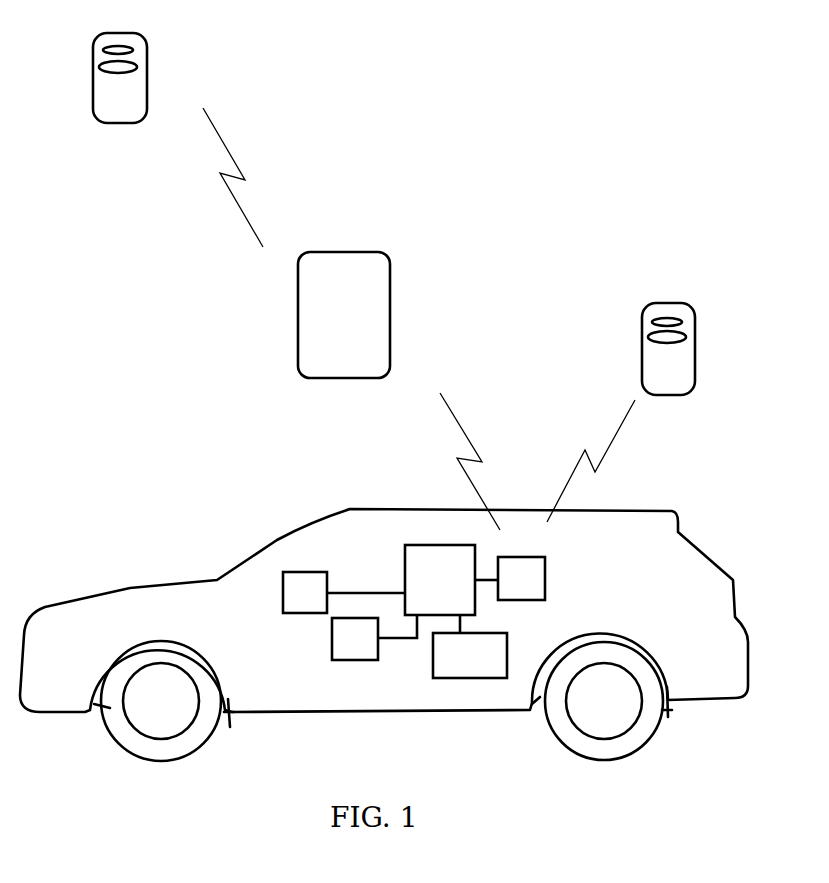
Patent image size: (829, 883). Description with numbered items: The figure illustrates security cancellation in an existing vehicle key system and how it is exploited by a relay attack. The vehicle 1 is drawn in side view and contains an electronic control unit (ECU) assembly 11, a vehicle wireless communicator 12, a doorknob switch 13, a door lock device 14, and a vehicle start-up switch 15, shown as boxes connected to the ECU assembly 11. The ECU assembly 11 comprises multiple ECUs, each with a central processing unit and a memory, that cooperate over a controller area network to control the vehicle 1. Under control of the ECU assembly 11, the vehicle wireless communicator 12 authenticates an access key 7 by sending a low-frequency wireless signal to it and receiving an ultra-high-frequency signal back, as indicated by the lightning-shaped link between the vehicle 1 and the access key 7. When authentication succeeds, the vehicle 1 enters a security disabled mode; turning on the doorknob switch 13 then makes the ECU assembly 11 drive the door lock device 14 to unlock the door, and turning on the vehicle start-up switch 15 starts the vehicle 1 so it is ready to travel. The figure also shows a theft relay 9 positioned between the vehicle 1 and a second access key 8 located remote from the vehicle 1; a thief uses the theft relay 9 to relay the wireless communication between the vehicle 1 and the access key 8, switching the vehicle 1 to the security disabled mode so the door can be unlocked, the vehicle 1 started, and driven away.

The vehicle 1 is at (631, 497).
The access key 7 is at (677, 346).
The access key 8 is at (128, 77).
The theft relay 9 is at (344, 315).
The electronic control unit (ECU) assembly 11 is at (440, 580).
The vehicle wireless communicator 12 is at (510, 578).
The doorknob switch 13 is at (374, 637).
The door lock device 14 is at (470, 646).
The vehicle start-up switch 15 is at (344, 592).